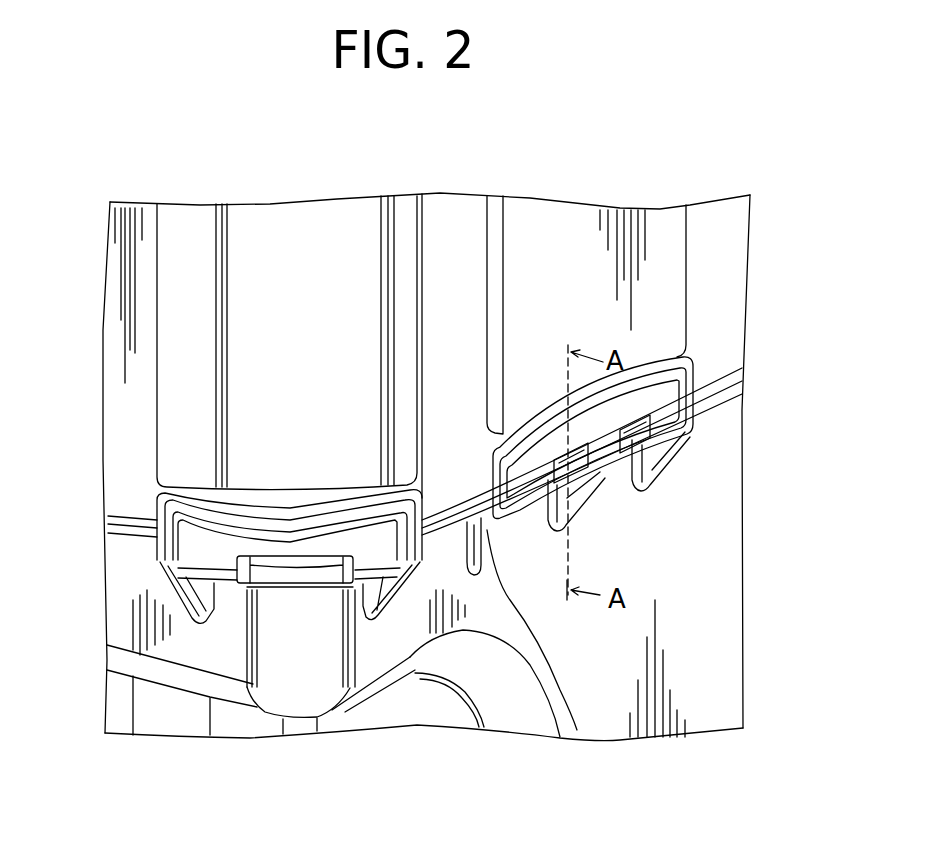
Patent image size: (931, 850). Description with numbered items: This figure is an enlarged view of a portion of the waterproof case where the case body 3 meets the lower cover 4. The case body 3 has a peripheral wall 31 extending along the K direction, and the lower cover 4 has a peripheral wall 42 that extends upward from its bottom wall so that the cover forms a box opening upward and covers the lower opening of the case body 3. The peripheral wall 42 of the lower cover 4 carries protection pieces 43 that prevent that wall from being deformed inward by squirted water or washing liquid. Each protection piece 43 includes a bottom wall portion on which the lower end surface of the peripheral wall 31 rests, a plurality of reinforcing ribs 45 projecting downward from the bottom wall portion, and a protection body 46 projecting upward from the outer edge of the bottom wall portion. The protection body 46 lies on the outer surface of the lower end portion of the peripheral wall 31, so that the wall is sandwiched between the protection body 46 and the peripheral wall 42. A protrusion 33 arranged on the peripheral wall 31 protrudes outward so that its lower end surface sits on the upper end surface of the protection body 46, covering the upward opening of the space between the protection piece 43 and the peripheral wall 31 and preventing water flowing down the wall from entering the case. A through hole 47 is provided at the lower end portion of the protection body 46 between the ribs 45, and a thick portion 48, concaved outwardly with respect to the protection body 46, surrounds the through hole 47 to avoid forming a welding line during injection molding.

The case body 3 is at (670, 207).
The lower cover 4 is at (756, 635).
The peripheral wall 31 is at (450, 285).
The protrusion 33 is at (258, 430).
The peripheral wall 42 is at (705, 570).
The protection piece 43 is at (146, 523).
The reinforcing rib 45 is at (183, 587).
The protection body 46 is at (207, 547).
The through hole 47 is at (303, 575).
The thick portion 48 is at (358, 567).